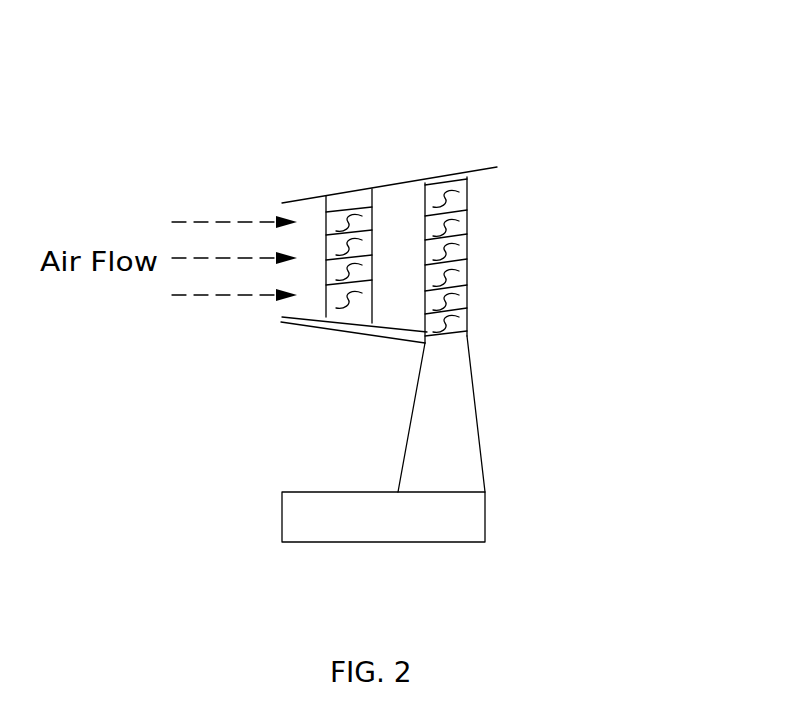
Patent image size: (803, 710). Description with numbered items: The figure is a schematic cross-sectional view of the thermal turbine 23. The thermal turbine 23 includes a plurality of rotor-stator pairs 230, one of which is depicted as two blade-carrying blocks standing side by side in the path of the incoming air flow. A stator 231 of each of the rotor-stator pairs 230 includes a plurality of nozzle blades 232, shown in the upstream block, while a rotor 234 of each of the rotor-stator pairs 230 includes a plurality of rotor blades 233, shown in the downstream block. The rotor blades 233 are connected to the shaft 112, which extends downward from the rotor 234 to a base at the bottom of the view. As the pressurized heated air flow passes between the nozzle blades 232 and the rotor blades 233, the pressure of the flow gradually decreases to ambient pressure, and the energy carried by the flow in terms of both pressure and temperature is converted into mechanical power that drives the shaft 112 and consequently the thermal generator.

The thermal turbine 23 is at (597, 275).
The rotor-stator pairs 230 is at (395, 112).
The stator 231 is at (345, 197).
The nozzle blades 232 is at (345, 270).
The rotor blades 233 is at (467, 220).
The rotor 234 is at (443, 187).
The shaft 112 is at (395, 505).